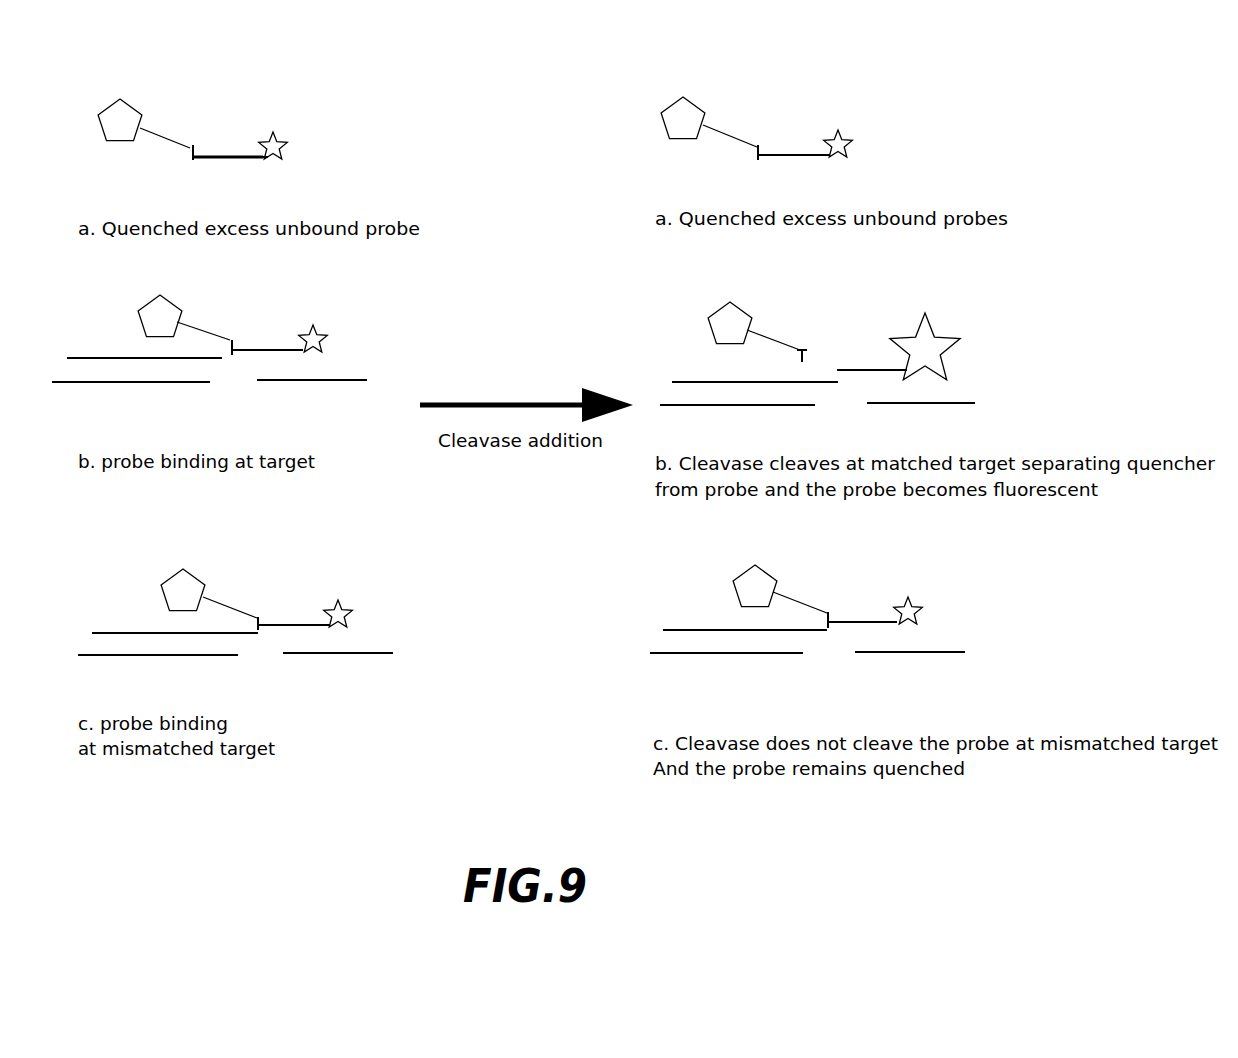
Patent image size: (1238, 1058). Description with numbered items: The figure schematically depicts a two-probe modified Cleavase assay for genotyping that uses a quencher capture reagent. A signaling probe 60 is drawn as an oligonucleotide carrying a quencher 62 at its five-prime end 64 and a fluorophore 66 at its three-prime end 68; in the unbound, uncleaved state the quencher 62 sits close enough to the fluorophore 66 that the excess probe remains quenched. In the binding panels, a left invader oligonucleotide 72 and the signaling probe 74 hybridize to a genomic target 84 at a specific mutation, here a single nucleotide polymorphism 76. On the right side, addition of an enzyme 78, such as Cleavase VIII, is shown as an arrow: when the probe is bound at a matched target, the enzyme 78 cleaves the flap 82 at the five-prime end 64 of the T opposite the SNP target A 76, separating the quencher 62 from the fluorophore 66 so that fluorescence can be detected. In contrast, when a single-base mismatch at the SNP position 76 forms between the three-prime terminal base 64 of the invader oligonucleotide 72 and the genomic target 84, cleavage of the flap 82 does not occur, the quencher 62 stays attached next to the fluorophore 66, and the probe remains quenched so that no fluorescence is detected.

The signaling probe 60 is at (501, 346).
The quencher 62 is at (412, 332).
The 5' end 64 is at (143, 132).
The fluorophore 66 is at (630, 365).
The 3' end 68 is at (264, 160).
The left invader oligonucleotide 72 is at (93, 357).
The signaling probe 74 is at (557, 387).
The single nucleotide polymorphism 76 is at (564, 532).
The enzyme 78 is at (535, 400).
The flap 82 is at (515, 422).
The genomic target 84 is at (513, 541).